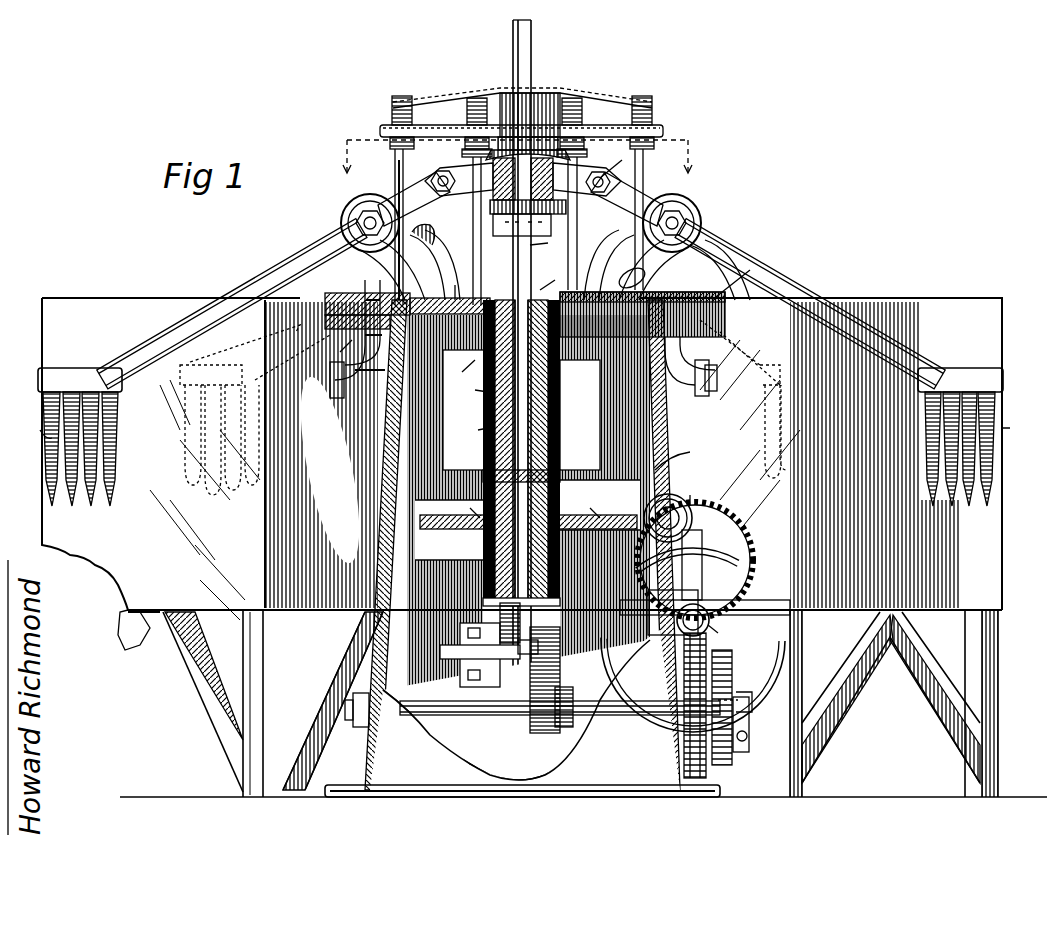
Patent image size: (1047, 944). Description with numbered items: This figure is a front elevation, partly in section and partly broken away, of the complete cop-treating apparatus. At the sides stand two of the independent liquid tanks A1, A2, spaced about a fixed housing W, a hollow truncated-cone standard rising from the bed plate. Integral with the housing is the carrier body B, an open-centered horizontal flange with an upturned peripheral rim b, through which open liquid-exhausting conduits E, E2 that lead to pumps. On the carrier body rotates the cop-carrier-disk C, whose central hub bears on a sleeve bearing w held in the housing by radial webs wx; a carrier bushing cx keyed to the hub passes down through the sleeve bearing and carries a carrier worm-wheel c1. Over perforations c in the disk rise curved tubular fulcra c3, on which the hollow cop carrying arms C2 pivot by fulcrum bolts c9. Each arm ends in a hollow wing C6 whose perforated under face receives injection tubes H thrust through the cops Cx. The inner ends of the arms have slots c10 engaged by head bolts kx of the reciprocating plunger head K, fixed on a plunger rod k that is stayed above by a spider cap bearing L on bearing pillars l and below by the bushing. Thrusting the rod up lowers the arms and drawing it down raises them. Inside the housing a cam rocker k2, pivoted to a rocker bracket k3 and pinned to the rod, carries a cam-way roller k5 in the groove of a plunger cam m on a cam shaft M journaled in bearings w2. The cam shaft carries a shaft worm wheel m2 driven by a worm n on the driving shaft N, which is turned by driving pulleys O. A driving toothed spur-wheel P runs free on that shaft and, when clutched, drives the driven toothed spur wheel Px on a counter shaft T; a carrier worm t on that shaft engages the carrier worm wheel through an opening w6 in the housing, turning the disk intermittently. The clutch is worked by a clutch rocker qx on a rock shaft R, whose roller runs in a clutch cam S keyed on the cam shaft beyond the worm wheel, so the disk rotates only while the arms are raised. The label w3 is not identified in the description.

The plunger rod k is at (518, 56).
The spider cap bearing L is at (592, 118).
The bearing pillars l is at (394, 165).
The reciprocating plunger head K is at (523, 186).
The head bolts kx is at (620, 160).
The slot c10 is at (624, 190).
The fulcrum bolt c9 is at (358, 212).
The cop carrying arms C2 is at (521, 304).
The tubular fulcra c3 is at (362, 268).
The cop-carrier-disk C is at (604, 275).
The carrier bushing cx is at (556, 556).
The rocker bracket k3 is at (472, 646).
The tank A1 is at (522, 474).
The tank A2 is at (821, 454).
The wing C6 is at (520, 380).
The injection tubes H is at (98, 505).
The cops Cx is at (527, 428).
The peripheral rim b is at (405, 301).
The carrier body B is at (330, 318).
The liquid-exhausting conduit E is at (330, 385).
The pipe fitting e is at (343, 346).
The perforations c is at (364, 364).
The liquid-exhausting conduit E2 is at (690, 392).
The fixed housing W is at (522, 545).
The sleeve bearing w is at (473, 392).
The radial webs wx is at (473, 430).
The carrier worm-wheel c1 is at (521, 439).
The driven toothed spur wheel Px is at (722, 515).
The opening w6 is at (668, 480).
The counter shaft T is at (668, 518).
The carrier worm t is at (683, 496).
The driving pulleys O is at (745, 560).
The driving toothed spur-wheel P is at (720, 580).
The bearing box w3 is at (673, 610).
The driving shaft N is at (693, 620).
The worm n is at (719, 634).
The shaft worm wheel m2 is at (704, 775).
The clutch cam S is at (722, 707).
The rock shaft R is at (752, 703).
The clutch rocker qx is at (750, 722).
The cam shaft M is at (445, 715).
The bearings w2 is at (357, 719).
The plunger cam m is at (551, 680).
The cam rocker k2 is at (525, 620).
The cam-way roller k5 is at (530, 650).